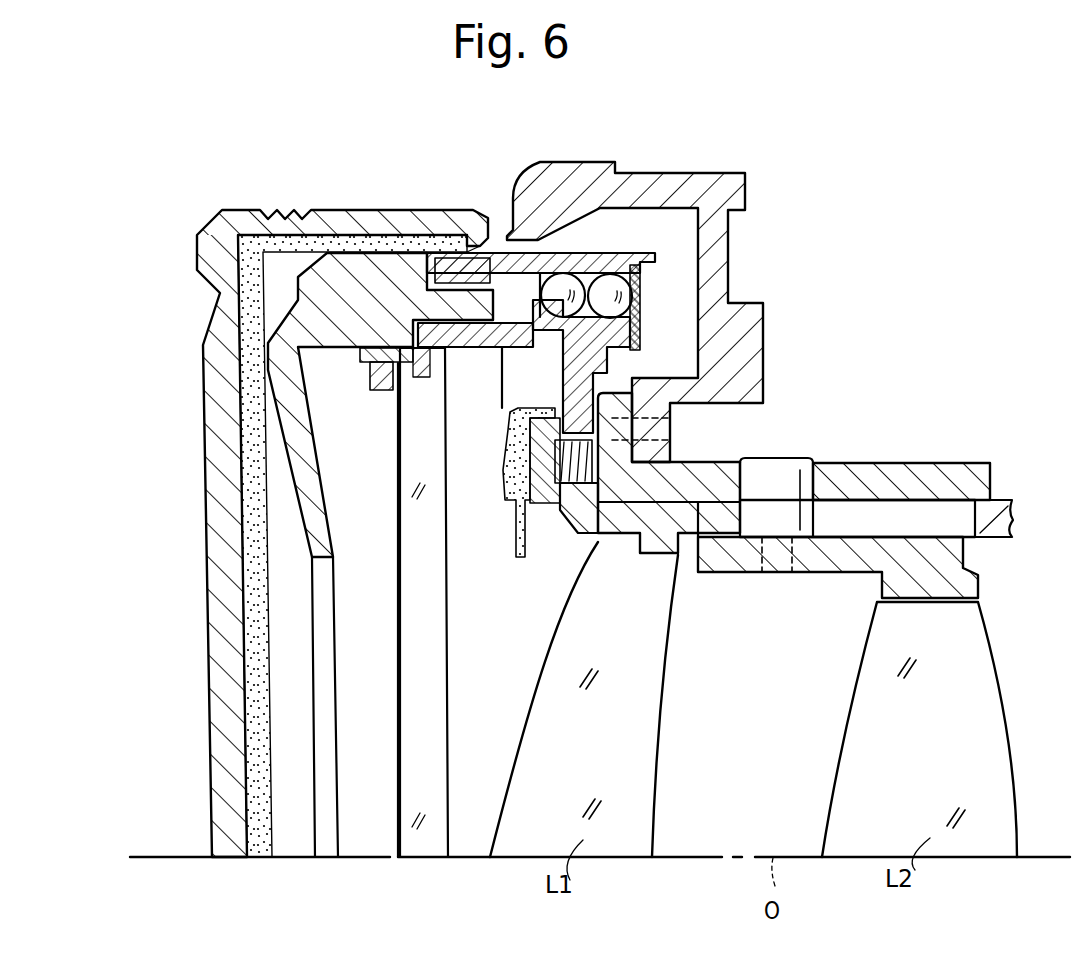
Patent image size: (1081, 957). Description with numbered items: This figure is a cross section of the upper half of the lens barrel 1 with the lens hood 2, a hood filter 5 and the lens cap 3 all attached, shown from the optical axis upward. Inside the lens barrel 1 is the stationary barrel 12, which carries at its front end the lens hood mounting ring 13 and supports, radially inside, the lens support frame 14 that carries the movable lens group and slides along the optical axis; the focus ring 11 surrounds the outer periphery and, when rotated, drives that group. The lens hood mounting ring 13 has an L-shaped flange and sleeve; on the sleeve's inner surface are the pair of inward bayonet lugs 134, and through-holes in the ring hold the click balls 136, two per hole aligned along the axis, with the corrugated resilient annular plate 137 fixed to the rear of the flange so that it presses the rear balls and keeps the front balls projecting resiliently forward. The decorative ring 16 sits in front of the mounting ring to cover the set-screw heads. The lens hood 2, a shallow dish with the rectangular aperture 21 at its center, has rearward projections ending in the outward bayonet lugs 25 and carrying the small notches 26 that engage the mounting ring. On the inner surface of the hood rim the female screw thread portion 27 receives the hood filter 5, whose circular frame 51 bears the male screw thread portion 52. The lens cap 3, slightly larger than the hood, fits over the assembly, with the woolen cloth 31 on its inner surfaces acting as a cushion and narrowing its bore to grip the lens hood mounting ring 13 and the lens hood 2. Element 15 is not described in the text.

The lens barrel 1 is at (888, 328).
The lens hood 2 is at (345, 275).
The lens cap 3 is at (232, 213).
The hood filter 5 is at (427, 623).
The focus ring 11 is at (722, 182).
The stationary barrel 12 is at (995, 505).
The lens hood mounting ring 13 is at (527, 262).
The lens support frame 14 is at (975, 572).
The lens holder 15 is at (940, 470).
The decorative ring 16 is at (512, 503).
The rectangular aperture 21 is at (327, 767).
The outward bayonet lugs 25 is at (527, 322).
The small notches 26 is at (548, 292).
The female screw thread portion 27 is at (367, 352).
The woolen cloth 31 is at (255, 605).
The circular frame 51 is at (385, 388).
The male screw thread portion 52 is at (373, 380).
The inward bayonet lugs 134 is at (473, 240).
The click balls 136 is at (607, 287).
The corrugated resilient annular plate 137 is at (638, 320).